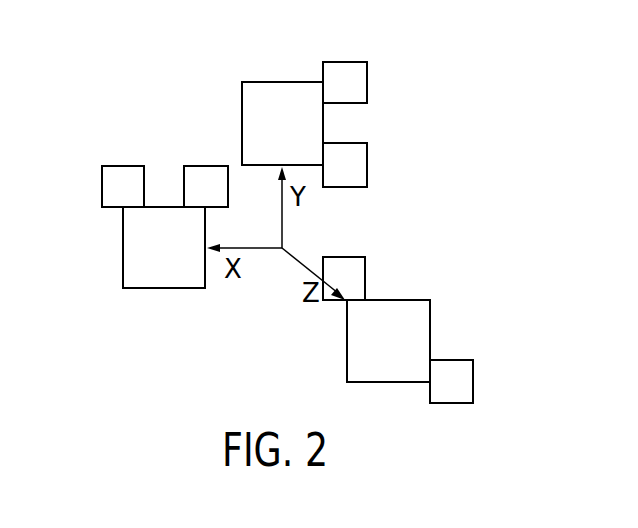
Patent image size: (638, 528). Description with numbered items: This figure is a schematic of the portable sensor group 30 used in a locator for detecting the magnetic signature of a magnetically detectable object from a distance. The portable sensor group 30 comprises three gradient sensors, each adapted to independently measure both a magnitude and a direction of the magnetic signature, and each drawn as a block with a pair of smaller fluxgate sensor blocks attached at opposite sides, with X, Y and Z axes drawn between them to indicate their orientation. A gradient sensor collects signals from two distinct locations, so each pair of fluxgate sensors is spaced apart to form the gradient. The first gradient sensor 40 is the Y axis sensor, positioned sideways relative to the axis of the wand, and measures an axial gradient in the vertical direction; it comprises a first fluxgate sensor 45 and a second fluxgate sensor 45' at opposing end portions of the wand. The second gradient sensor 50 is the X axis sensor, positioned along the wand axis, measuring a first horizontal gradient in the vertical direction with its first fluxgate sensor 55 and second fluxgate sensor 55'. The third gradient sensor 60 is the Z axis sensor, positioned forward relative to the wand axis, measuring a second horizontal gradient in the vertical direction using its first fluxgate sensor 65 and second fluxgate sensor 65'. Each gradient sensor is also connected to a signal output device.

The portable sensor group 30 is at (416, 104).
The first gradient sensor 40 is at (282, 123).
The first fluxgate sensor 45 is at (345, 165).
The second fluxgate sensor 45' is at (345, 82).
The second gradient sensor 50 is at (164, 247).
The first fluxgate sensor 55 is at (206, 186).
The second fluxgate sensor 55' is at (123, 186).
The third gradient sensor 60 is at (388, 341).
The first fluxgate sensor 65 is at (344, 278).
The second fluxgate sensor 65' is at (451, 381).